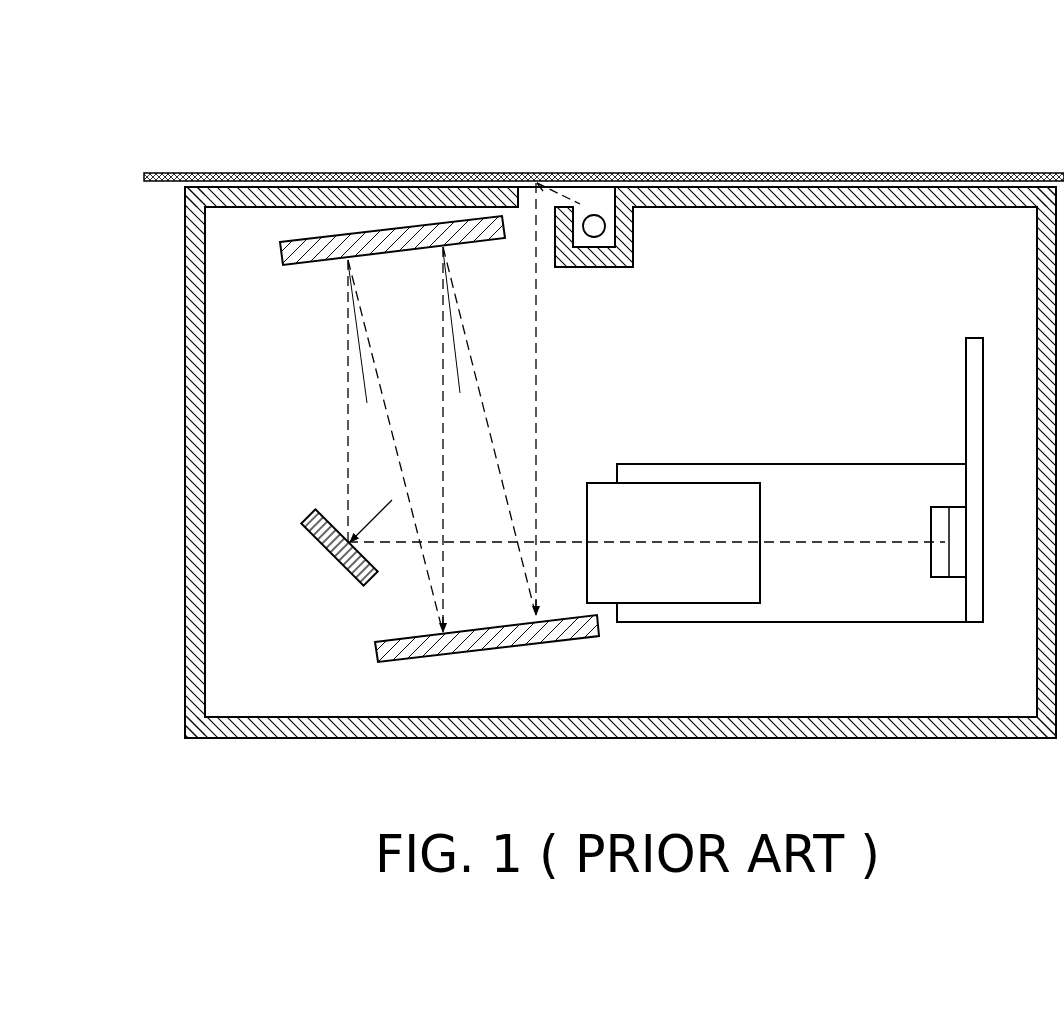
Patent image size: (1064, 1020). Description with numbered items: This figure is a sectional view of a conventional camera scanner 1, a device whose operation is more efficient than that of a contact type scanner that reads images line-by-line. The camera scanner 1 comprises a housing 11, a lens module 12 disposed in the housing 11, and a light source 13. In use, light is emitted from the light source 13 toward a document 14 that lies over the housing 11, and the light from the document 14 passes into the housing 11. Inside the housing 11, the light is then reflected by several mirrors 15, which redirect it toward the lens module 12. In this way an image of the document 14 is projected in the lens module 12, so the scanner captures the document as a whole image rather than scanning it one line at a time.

The camera scanner 1 is at (187, 148).
The housing 11 is at (270, 196).
The lens module 12 is at (692, 583).
The light source 13 is at (595, 222).
The document 14 is at (832, 174).
The mirrors 15 is at (378, 238).